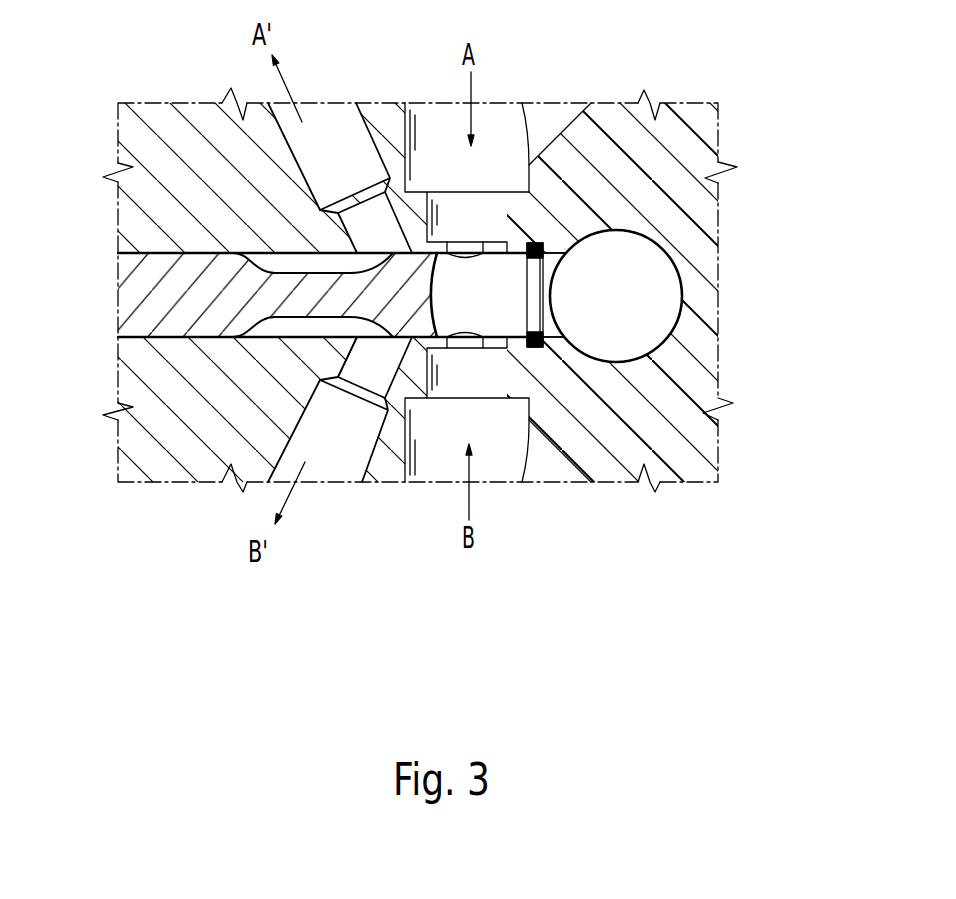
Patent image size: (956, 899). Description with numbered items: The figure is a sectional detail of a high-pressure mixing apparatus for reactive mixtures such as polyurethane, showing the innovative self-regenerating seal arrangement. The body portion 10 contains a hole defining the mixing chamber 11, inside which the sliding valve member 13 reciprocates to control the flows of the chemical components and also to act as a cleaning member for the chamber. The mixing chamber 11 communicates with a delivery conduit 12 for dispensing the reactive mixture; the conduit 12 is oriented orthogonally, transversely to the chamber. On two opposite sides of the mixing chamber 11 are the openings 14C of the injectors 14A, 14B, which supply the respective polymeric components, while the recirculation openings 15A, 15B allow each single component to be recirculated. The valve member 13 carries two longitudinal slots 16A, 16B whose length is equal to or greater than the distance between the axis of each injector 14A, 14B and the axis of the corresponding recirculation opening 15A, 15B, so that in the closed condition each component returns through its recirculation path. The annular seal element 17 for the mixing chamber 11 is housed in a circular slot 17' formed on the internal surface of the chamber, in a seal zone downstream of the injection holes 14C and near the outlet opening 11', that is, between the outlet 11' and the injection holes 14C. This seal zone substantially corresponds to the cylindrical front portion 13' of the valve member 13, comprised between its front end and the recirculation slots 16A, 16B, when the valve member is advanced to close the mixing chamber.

The body portion 10 is at (688, 145).
The mixing chamber 11 is at (531, 171).
The outlet opening 11' is at (650, 175).
The delivery conduit 12 is at (652, 288).
The sliding valve member 13 is at (244, 416).
The cylindrical front portion 13' is at (382, 458).
The injector 14A is at (440, 130).
The injector 14B is at (497, 462).
The injection openings 14C is at (468, 252).
The recirculation opening 15A is at (333, 125).
The recirculation opening 15B is at (338, 466).
The longitudinal slot 16A is at (275, 267).
The longitudinal slot 16B is at (265, 322).
The annular seal element 17 is at (672, 297).
The circular slot 17' is at (672, 366).